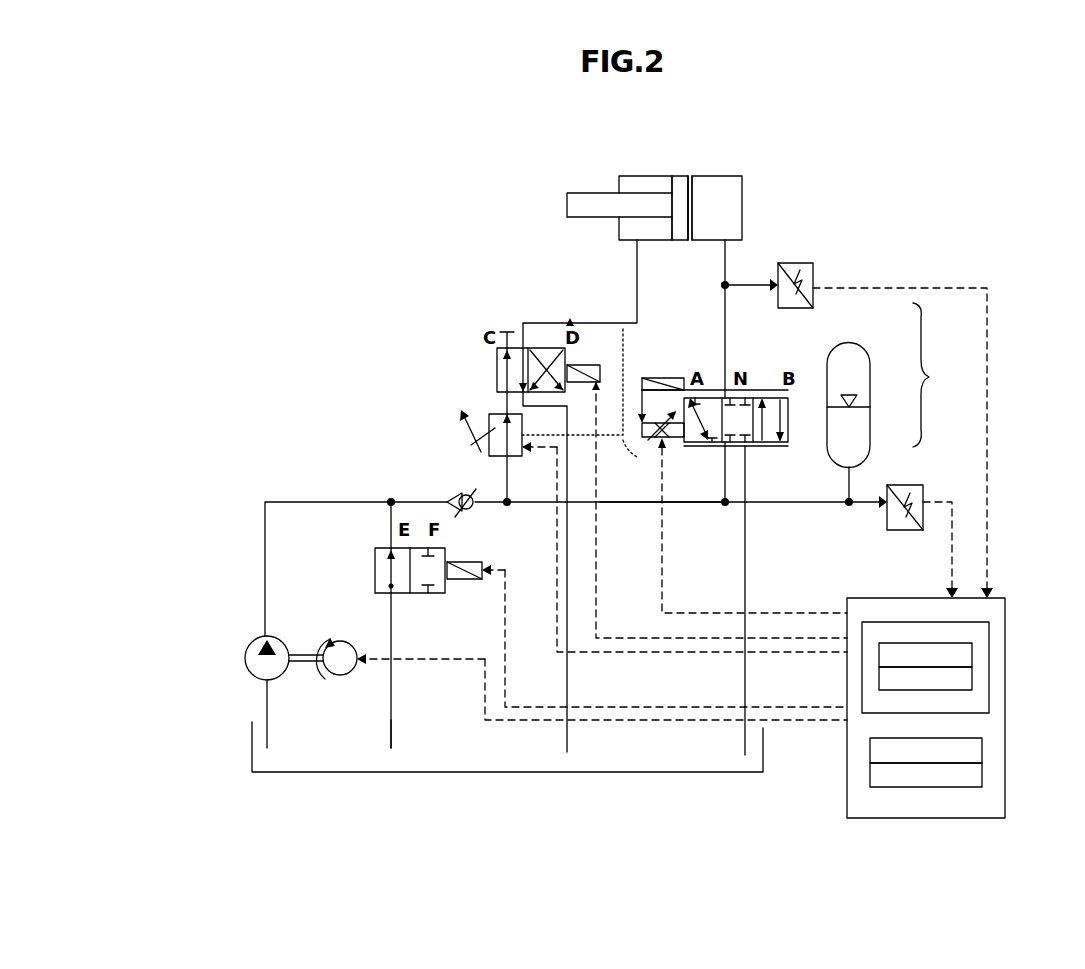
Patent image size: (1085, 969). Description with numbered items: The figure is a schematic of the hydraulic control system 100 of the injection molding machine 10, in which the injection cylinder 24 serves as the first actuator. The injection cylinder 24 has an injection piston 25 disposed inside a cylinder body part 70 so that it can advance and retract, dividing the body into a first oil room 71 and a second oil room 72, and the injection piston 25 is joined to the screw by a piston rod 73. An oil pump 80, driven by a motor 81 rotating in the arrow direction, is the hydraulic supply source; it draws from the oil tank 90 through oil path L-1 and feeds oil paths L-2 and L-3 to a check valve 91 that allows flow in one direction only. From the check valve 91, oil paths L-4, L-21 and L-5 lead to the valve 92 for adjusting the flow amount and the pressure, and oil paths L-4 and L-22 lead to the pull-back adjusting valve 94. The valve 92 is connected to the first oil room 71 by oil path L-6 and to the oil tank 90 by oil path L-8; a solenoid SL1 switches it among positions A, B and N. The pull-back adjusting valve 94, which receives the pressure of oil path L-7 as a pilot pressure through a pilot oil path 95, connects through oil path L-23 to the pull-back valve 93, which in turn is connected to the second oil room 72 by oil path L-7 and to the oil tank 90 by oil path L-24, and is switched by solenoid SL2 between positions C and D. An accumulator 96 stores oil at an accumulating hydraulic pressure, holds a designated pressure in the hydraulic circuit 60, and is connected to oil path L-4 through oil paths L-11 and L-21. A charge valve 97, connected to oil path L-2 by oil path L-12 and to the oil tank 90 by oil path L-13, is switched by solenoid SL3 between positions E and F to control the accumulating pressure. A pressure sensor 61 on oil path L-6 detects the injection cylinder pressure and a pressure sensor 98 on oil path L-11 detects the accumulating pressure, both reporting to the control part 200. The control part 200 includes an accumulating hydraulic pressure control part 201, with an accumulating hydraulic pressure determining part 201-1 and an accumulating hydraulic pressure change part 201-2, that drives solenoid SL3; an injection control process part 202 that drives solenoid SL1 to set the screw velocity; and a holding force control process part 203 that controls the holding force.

The hydraulic control system 100 is at (224, 121).
The injection cylinder 24 is at (742, 176).
The injection piston 25 is at (679, 176).
The cylinder body part 70 is at (716, 176).
The first oil room 71 is at (738, 199).
The second oil room 72 is at (632, 176).
The piston rod 73 is at (582, 193).
The injection molding machine 10 is at (732, 263).
The pressure sensor 61 is at (810, 261).
The hydraulic circuit 60 is at (936, 375).
The valve for adjusting the flow amount and the pressure 92 is at (760, 388).
The accumulator 96 is at (870, 404).
The pressure sensor 98 is at (901, 484).
The pull-back valve 93 is at (496, 357).
The pull-back adjusting valve 94 is at (480, 414).
The pilot oil path 95 is at (580, 407).
The charge valve 97 is at (375, 572).
The check valve 91 is at (447, 498).
The oil pump 80 is at (242, 632).
The motor 81 is at (342, 643).
The oil tank 90 is at (250, 749).
The control part 200 is at (922, 818).
The accumulating hydraulic pressure control part 201 is at (881, 622).
The accumulating hydraulic pressure determining part 201-1 is at (972, 656).
The accumulating hydraulic pressure change part 201-2 is at (972, 682).
The injection control process part 202 is at (870, 744).
The holding force control process part 203 is at (870, 776).
The solenoid SL1 is at (742, 485).
The solenoid SL2 is at (707, 490).
The solenoid SL3 is at (647, 634).
The oil path L-1 is at (268, 718).
The oil path L-2 is at (302, 502).
The oil path L-3 is at (391, 502).
The oil path L-4 is at (481, 508).
The oil path L-5 is at (723, 474).
The oil path L-6 is at (725, 319).
The oil path L-7 is at (637, 287).
The oil path L-8 is at (747, 690).
The oil path L-11 is at (796, 510).
The oil path L-12 is at (391, 530).
The oil path L-13 is at (392, 722).
The oil path L-21 is at (686, 510).
The oil path L-22 is at (509, 490).
The oil path L-23 is at (496, 398).
The oil path L-24 is at (568, 690).